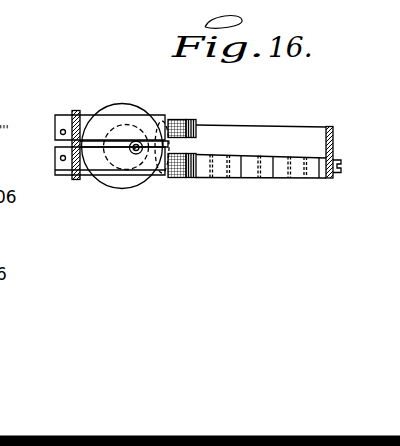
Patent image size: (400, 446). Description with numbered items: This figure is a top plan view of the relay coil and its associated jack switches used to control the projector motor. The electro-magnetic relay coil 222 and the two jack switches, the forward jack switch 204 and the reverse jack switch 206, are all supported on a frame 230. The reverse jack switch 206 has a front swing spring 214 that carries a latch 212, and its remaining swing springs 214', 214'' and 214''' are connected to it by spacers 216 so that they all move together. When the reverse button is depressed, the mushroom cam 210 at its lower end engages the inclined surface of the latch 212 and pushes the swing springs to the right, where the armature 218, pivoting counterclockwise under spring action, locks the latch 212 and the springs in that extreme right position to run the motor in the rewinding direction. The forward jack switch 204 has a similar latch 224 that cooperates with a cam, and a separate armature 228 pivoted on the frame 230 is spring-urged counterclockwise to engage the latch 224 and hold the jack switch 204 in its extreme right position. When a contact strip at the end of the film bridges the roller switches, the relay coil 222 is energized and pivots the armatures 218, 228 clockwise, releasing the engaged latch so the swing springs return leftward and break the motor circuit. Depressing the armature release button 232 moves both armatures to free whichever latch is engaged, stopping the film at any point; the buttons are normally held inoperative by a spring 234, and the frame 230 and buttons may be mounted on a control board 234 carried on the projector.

The jack switch 204 is at (219, 182).
The reverse jack switch 206 is at (176, 118).
The mushroom cam 210 is at (164, 118).
The latch 212 is at (193, 154).
The front swing spring 214 is at (193, 183).
The swing spring 214' is at (247, 188).
The swing spring 214'' is at (283, 211).
The swing spring 214''' is at (323, 189).
The spacers 216 is at (249, 157).
The armature 218 is at (89, 180).
The electro-magnetic relay coil 222 is at (128, 183).
The latch 224 is at (189, 119).
The armature 228 is at (95, 127).
The frame 230 is at (334, 128).
The armature release button 232 is at (140, 142).
The spring 234 is at (15, 61).